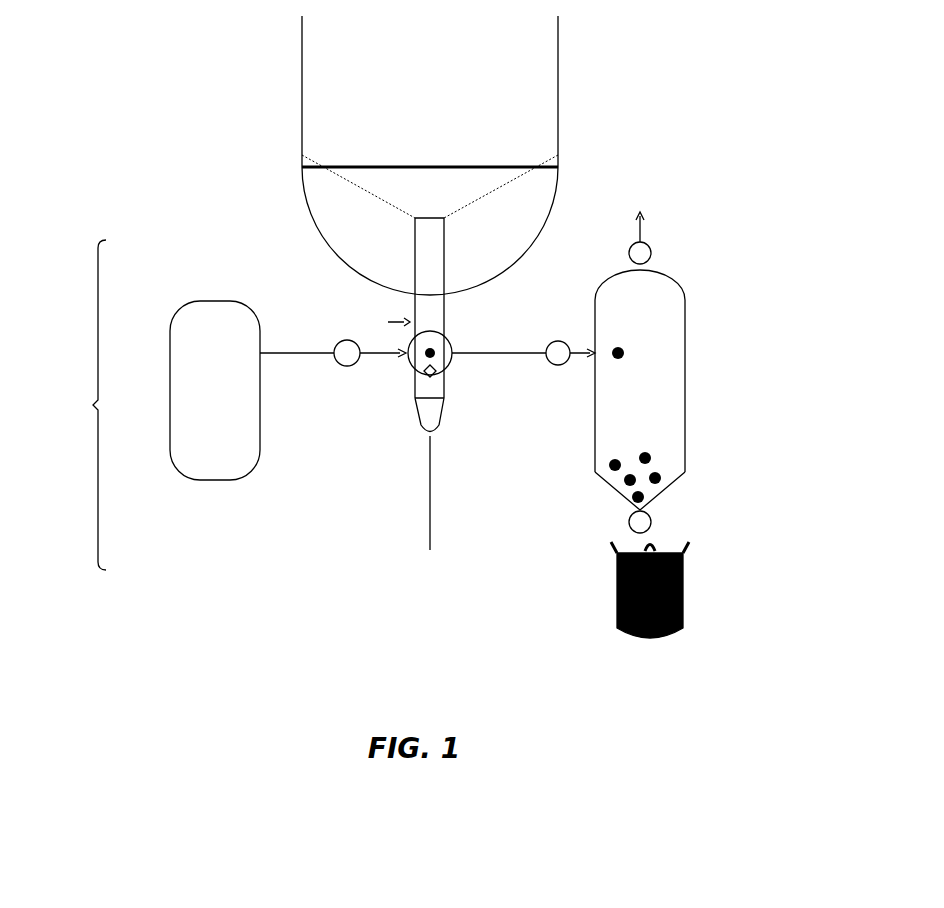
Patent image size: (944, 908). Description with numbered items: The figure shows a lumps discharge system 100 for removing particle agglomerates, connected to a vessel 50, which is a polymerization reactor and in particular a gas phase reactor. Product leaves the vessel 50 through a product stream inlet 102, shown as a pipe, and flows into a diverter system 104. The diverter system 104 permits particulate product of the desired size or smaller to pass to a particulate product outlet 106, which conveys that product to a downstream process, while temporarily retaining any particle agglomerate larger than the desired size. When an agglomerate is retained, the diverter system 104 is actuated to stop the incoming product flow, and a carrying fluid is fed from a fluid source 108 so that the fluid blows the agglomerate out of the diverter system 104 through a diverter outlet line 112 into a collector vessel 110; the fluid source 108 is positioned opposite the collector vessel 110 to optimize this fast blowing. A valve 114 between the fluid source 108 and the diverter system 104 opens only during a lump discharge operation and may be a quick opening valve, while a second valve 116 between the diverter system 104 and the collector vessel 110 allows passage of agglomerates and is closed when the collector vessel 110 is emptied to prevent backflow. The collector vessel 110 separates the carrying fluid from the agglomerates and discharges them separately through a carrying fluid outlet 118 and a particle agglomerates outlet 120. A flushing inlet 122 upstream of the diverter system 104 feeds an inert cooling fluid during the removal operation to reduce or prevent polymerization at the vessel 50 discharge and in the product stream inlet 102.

The vessel 50 is at (302, 88).
The lumps discharge system 100 is at (67, 405).
The product stream inlet 102 is at (441, 316).
The diverter system 104 is at (410, 360).
The particulate product outlet 106 is at (428, 512).
The fluid source 108 is at (252, 390).
The collector vessel 110 is at (686, 365).
The diverter outlet line 112 is at (510, 355).
The valve 114 is at (345, 368).
The second valve 116 is at (556, 341).
The carrying fluid outlet 118 is at (645, 248).
The particle agglomerates outlet 120 is at (651, 521).
The flushing inlet 122 is at (374, 317).